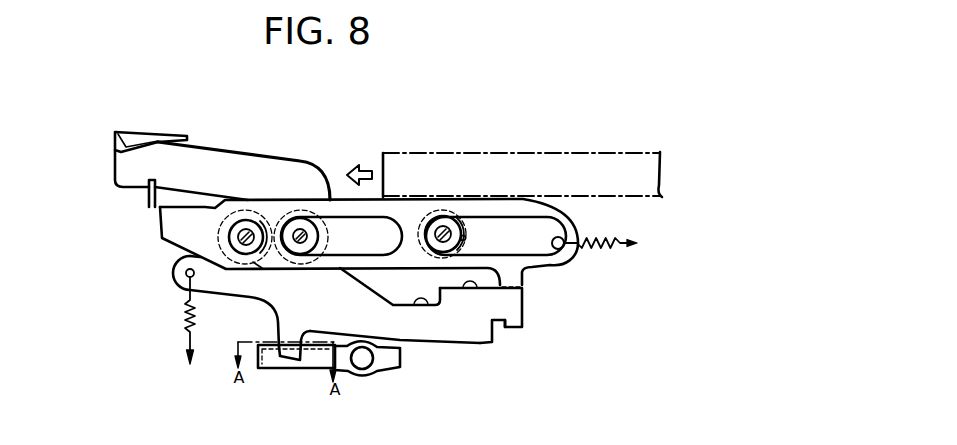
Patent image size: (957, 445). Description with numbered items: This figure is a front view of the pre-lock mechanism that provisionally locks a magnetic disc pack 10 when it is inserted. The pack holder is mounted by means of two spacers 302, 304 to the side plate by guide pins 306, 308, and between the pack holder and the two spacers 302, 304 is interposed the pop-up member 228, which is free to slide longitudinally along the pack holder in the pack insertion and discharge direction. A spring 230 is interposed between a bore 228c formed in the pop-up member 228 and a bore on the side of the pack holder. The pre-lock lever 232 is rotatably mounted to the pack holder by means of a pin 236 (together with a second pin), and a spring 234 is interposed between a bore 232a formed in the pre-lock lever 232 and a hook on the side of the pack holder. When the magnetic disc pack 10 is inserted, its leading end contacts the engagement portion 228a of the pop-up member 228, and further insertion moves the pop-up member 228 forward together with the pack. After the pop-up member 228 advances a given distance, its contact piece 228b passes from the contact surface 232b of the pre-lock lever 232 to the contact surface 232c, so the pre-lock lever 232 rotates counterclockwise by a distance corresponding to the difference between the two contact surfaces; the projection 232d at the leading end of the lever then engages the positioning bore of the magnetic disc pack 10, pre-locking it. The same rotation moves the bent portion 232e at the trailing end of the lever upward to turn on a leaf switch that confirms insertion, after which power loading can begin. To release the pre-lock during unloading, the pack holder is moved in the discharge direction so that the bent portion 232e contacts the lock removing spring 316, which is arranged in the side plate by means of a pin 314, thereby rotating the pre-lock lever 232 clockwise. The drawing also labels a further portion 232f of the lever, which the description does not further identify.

The magnetic disc pack 10 is at (556, 149).
The pop-up member 228 is at (518, 199).
The engagement portion 228a is at (148, 196).
The contact piece 228b is at (528, 292).
The bore 228c is at (568, 251).
The spring 230 is at (605, 235).
The pre-lock lever 232 is at (325, 188).
The bore 232a is at (170, 273).
The contact surface 232b is at (475, 297).
The contact surface 232c is at (430, 312).
The projection 232d is at (112, 157).
The bent portion 232e is at (520, 330).
The bent tang of lever 232f is at (310, 373).
The spring 234 is at (183, 318).
The pin 236 is at (301, 235).
The spacer 302 is at (267, 257).
The spacer 304 is at (465, 238).
The guide pin 306 is at (245, 228).
The guide pin 308 is at (443, 225).
The pin 314 is at (379, 373).
The lock removing spring 316 is at (277, 372).